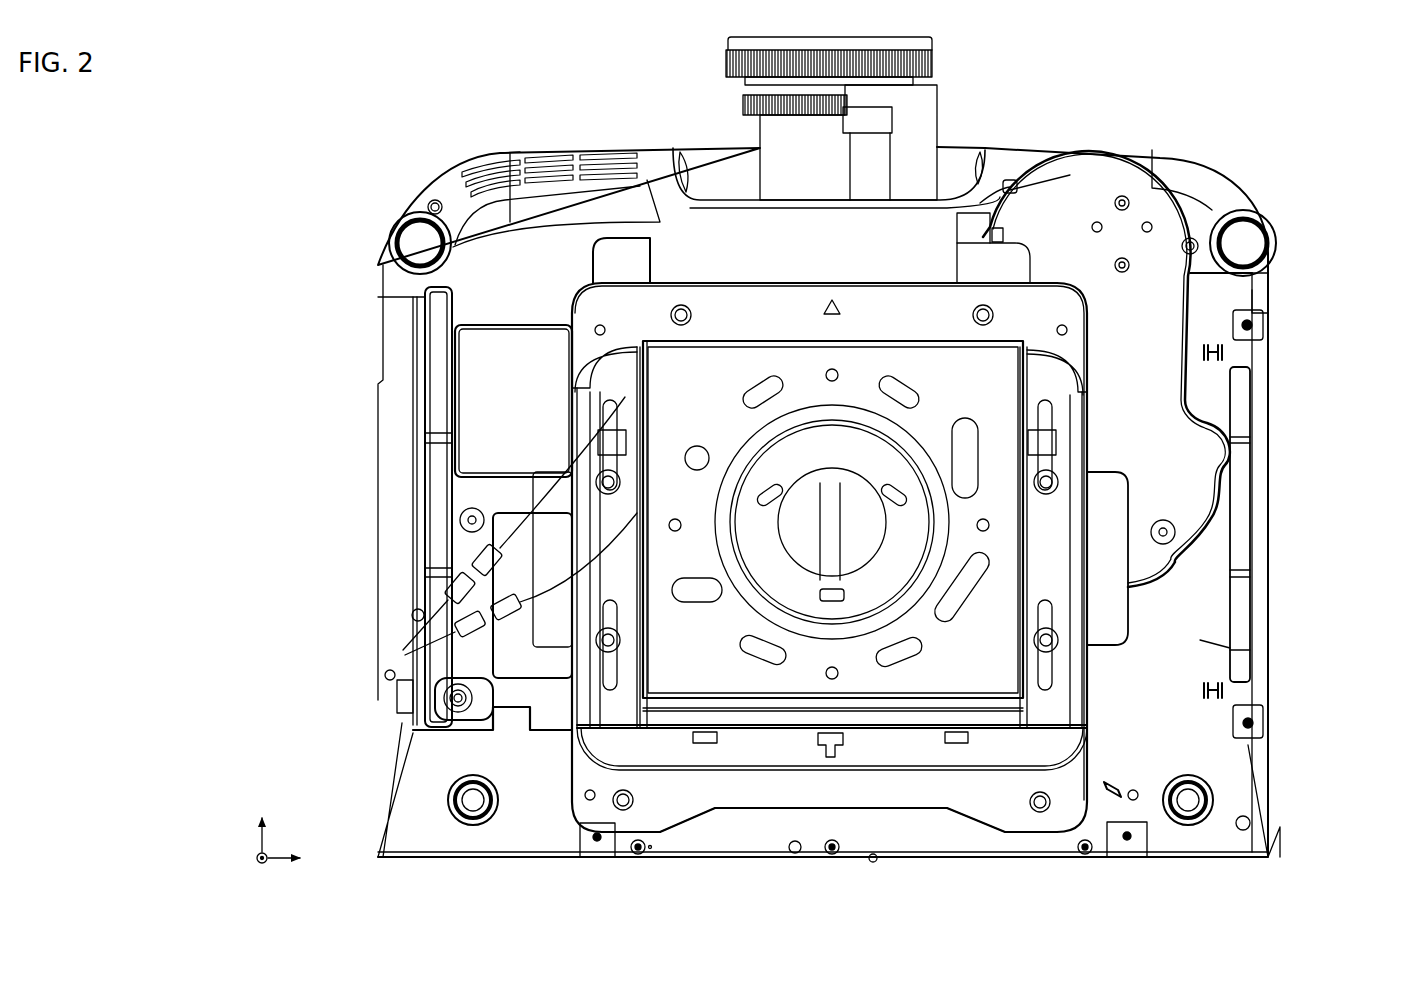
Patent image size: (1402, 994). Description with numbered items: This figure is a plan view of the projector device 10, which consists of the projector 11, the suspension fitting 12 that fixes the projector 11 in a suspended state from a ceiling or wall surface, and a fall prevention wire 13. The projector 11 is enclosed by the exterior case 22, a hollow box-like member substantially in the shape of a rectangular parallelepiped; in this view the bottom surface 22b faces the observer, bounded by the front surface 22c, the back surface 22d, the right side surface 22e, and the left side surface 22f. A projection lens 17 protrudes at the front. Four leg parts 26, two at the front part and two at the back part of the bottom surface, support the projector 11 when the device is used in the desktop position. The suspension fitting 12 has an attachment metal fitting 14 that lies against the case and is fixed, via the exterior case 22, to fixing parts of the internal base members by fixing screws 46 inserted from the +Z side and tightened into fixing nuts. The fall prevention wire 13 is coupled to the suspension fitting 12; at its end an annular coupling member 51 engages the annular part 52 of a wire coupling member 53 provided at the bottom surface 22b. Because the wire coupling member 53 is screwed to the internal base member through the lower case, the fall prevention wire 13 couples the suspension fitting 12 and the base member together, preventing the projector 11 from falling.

The projector device 10 is at (550, 130).
The projector 11 is at (497, 147).
The suspension fitting 12 is at (755, 275).
The fall prevention wire 13 is at (550, 445).
The attachment metal fitting 14 is at (737, 795).
The projection lens 17 is at (933, 60).
The exterior case 22 is at (1187, 155).
The bottom surface 22b is at (1197, 643).
The front surface 22c is at (1113, 150).
The back surface 22d is at (935, 860).
The right side surface 22e is at (1270, 515).
The left side surface 22f is at (376, 530).
The leg part 26 is at (410, 247).
The fixing screw 46 is at (680, 306).
The coupling member 51 is at (440, 600).
The annular part 52 is at (418, 675).
The wire coupling member 53 is at (405, 698).